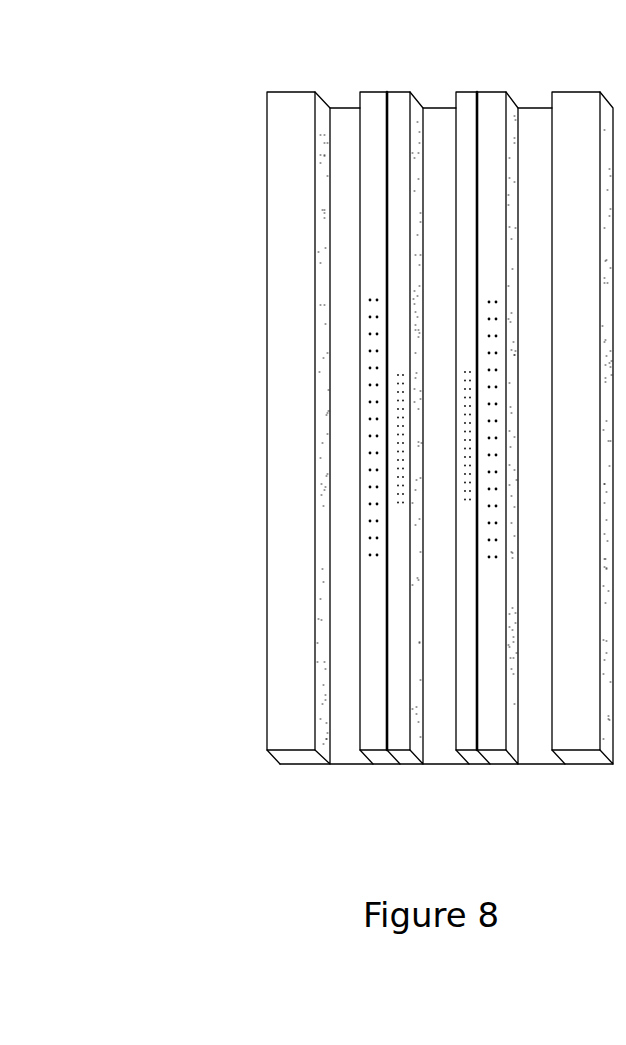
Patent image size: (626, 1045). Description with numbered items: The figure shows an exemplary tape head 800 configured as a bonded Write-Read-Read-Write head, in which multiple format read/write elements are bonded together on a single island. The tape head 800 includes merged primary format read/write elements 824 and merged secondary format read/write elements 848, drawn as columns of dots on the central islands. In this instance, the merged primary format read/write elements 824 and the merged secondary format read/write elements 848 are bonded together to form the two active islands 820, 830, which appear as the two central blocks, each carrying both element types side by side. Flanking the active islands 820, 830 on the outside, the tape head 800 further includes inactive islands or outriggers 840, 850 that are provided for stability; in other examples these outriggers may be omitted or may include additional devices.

The tape head 800 is at (387, 72).
The inactive island or outrigger 850 is at (283, 742).
The active island 830 is at (373, 742).
The active island 820 is at (467, 742).
The inactive island or outrigger 840 is at (558, 742).
The merged primary format read/write elements 824 is at (395, 397).
The merged secondary format read/write elements 848 is at (363, 487).